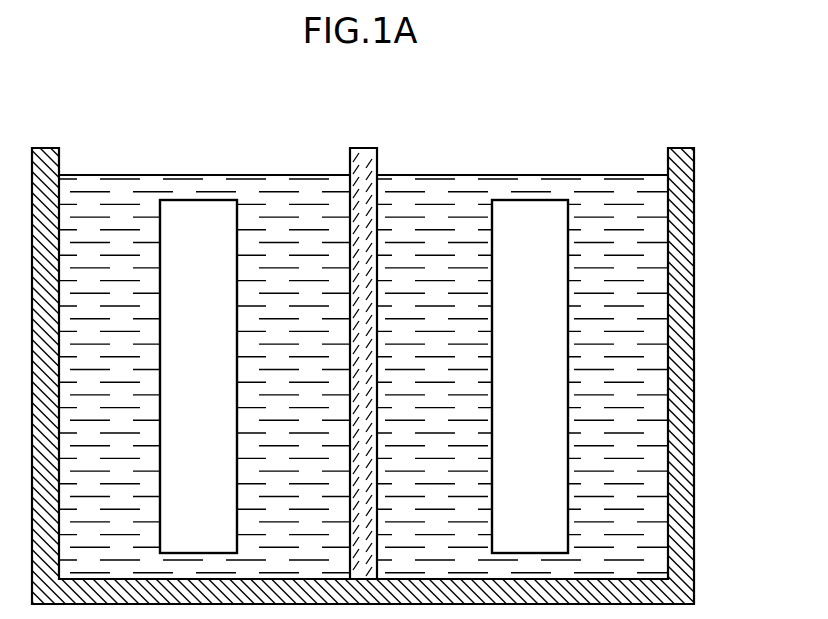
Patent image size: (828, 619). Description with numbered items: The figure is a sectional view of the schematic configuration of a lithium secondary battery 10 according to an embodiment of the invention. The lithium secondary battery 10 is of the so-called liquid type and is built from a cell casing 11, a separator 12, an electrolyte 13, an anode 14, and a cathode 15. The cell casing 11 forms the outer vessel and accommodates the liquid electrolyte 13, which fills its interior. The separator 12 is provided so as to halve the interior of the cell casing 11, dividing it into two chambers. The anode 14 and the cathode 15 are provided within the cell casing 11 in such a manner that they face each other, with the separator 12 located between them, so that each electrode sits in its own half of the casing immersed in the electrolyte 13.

The lithium secondary battery 10 is at (705, 126).
The cell casing 11 is at (689, 251).
The separator 12 is at (362, 158).
The electrolyte 13 is at (621, 190).
The anode 14 is at (199, 208).
The cathode 15 is at (528, 208).